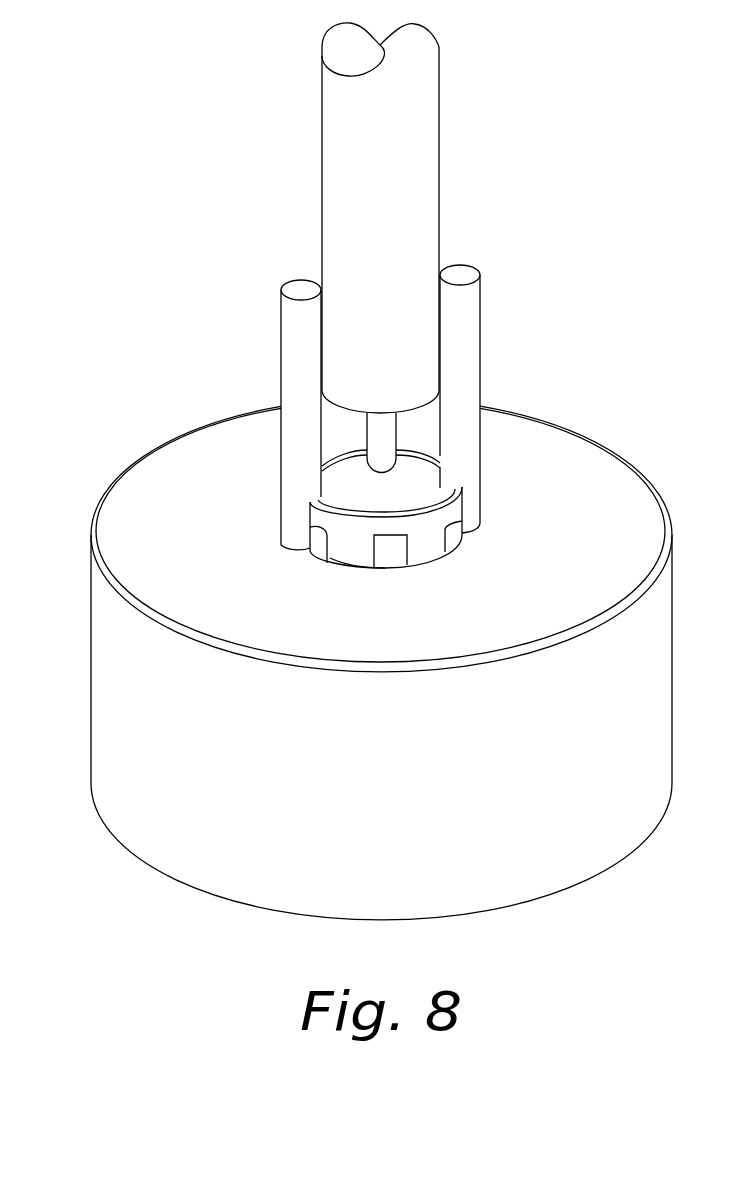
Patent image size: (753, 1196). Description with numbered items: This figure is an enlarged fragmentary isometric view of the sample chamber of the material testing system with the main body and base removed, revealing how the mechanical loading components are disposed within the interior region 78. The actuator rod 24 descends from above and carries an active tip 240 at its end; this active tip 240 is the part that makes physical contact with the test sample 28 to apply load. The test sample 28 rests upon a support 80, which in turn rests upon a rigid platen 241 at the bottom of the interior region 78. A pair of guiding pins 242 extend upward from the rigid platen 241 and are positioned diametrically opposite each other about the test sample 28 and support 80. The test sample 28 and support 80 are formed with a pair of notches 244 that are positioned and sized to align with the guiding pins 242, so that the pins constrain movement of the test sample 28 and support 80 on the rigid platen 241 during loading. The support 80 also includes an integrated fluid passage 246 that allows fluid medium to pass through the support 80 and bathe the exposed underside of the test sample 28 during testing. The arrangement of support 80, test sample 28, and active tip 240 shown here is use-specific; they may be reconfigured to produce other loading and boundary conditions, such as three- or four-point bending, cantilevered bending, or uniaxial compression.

The actuator rod 24 is at (373, 217).
The interior region 78 is at (492, 218).
The active tip 240 is at (378, 427).
The rigid platen 241 is at (160, 513).
The guiding pins 242 is at (300, 330).
The test sample 28 is at (406, 486).
The notches 244 is at (327, 536).
The integrated fluid passage 246 is at (394, 555).
The support 80 is at (428, 542).